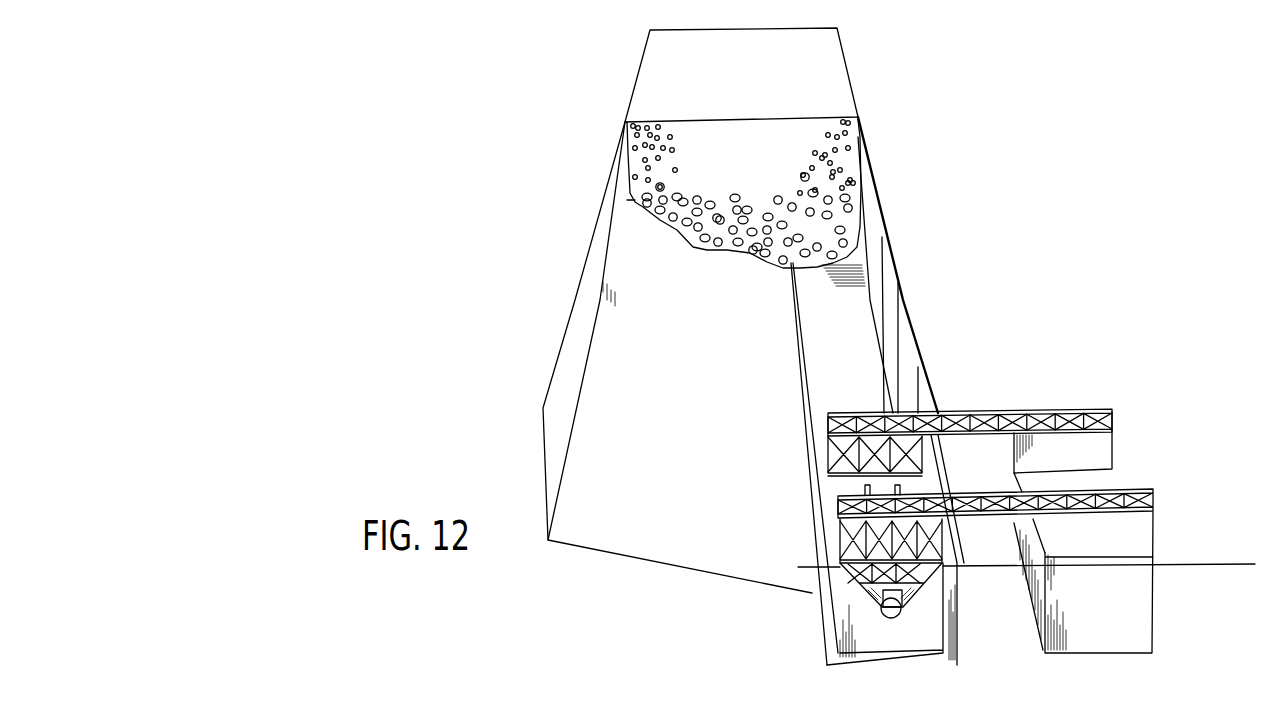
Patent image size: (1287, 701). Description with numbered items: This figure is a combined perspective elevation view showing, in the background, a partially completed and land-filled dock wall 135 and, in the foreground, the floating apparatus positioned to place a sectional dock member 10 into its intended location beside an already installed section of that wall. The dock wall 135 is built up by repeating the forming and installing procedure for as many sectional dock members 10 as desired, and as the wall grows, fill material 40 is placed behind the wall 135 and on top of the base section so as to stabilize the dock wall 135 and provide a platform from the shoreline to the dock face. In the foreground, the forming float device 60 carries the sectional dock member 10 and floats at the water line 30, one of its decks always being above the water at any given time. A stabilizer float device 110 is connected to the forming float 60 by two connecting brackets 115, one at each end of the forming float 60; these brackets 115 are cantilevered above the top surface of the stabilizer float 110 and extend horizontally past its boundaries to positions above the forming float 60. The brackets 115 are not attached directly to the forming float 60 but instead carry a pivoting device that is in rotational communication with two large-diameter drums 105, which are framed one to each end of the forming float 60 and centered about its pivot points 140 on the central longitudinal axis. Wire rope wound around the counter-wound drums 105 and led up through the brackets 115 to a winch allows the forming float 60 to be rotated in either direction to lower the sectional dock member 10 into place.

The sectional dock member 10 is at (905, 330).
The water line 30 is at (1198, 566).
The fill material 40 is at (842, 148).
The forming float device 60 is at (843, 643).
The drums 105 is at (882, 611).
The stabilizer float device 110 is at (1098, 645).
The connecting brackets 115 is at (1113, 412).
The dock wall 135 is at (872, 327).
The pivot points 140 is at (892, 609).